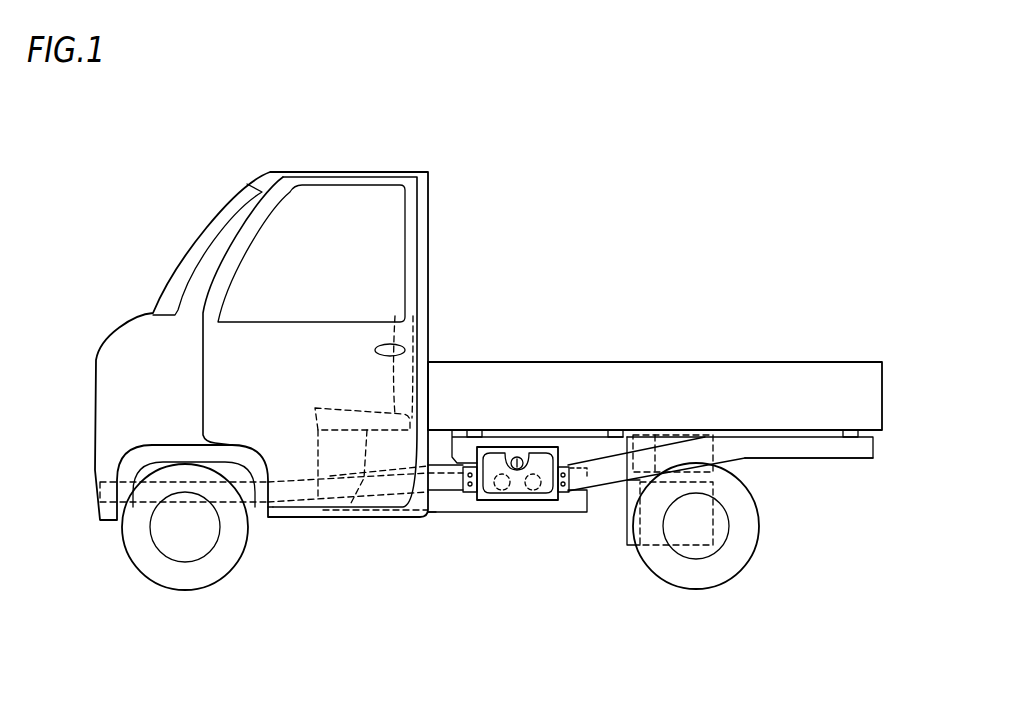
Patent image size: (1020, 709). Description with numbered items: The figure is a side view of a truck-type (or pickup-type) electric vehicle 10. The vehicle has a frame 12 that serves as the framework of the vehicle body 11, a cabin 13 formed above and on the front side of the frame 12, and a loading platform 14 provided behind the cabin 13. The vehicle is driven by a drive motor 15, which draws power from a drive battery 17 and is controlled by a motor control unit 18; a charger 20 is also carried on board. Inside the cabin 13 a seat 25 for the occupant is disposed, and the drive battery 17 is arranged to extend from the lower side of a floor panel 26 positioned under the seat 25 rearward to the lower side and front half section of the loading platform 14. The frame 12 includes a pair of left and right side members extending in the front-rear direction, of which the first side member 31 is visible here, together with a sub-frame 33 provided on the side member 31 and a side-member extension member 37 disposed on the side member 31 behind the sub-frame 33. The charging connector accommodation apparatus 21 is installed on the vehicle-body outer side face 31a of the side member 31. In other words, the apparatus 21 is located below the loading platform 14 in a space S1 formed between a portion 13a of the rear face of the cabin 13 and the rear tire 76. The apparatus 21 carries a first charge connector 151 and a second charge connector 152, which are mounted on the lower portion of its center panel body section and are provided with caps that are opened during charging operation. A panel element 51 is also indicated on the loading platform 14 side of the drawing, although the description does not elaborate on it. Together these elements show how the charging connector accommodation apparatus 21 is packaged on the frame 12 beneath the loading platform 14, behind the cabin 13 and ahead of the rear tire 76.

The truck-type electric vehicle 10 is at (565, 228).
The vehicle body 11 is at (382, 526).
The frame 12 is at (796, 477).
The cabin 13 is at (313, 170).
The portion of the rear face of the cabin 13a is at (432, 513).
The loading platform 14 is at (608, 359).
The drive motor 15 is at (627, 522).
The drive battery 17 is at (470, 504).
The motor control unit 18 is at (640, 428).
The charger 20 is at (685, 428).
The charging connector accommodation apparatus 21 is at (525, 511).
The seat 25 is at (347, 408).
The floor panel 26 is at (345, 517).
The first side member 31 is at (605, 481).
The vehicle-body outer side face 31a is at (453, 483).
The sub-frame 33 is at (508, 443).
The side-member extension member 37 is at (810, 432).
The bed side panel 51 is at (555, 370).
The rear tire 76 is at (695, 582).
The first charge connector 151 is at (535, 492).
The second charge connector 152 is at (502, 492).
The space S1 is at (574, 500).